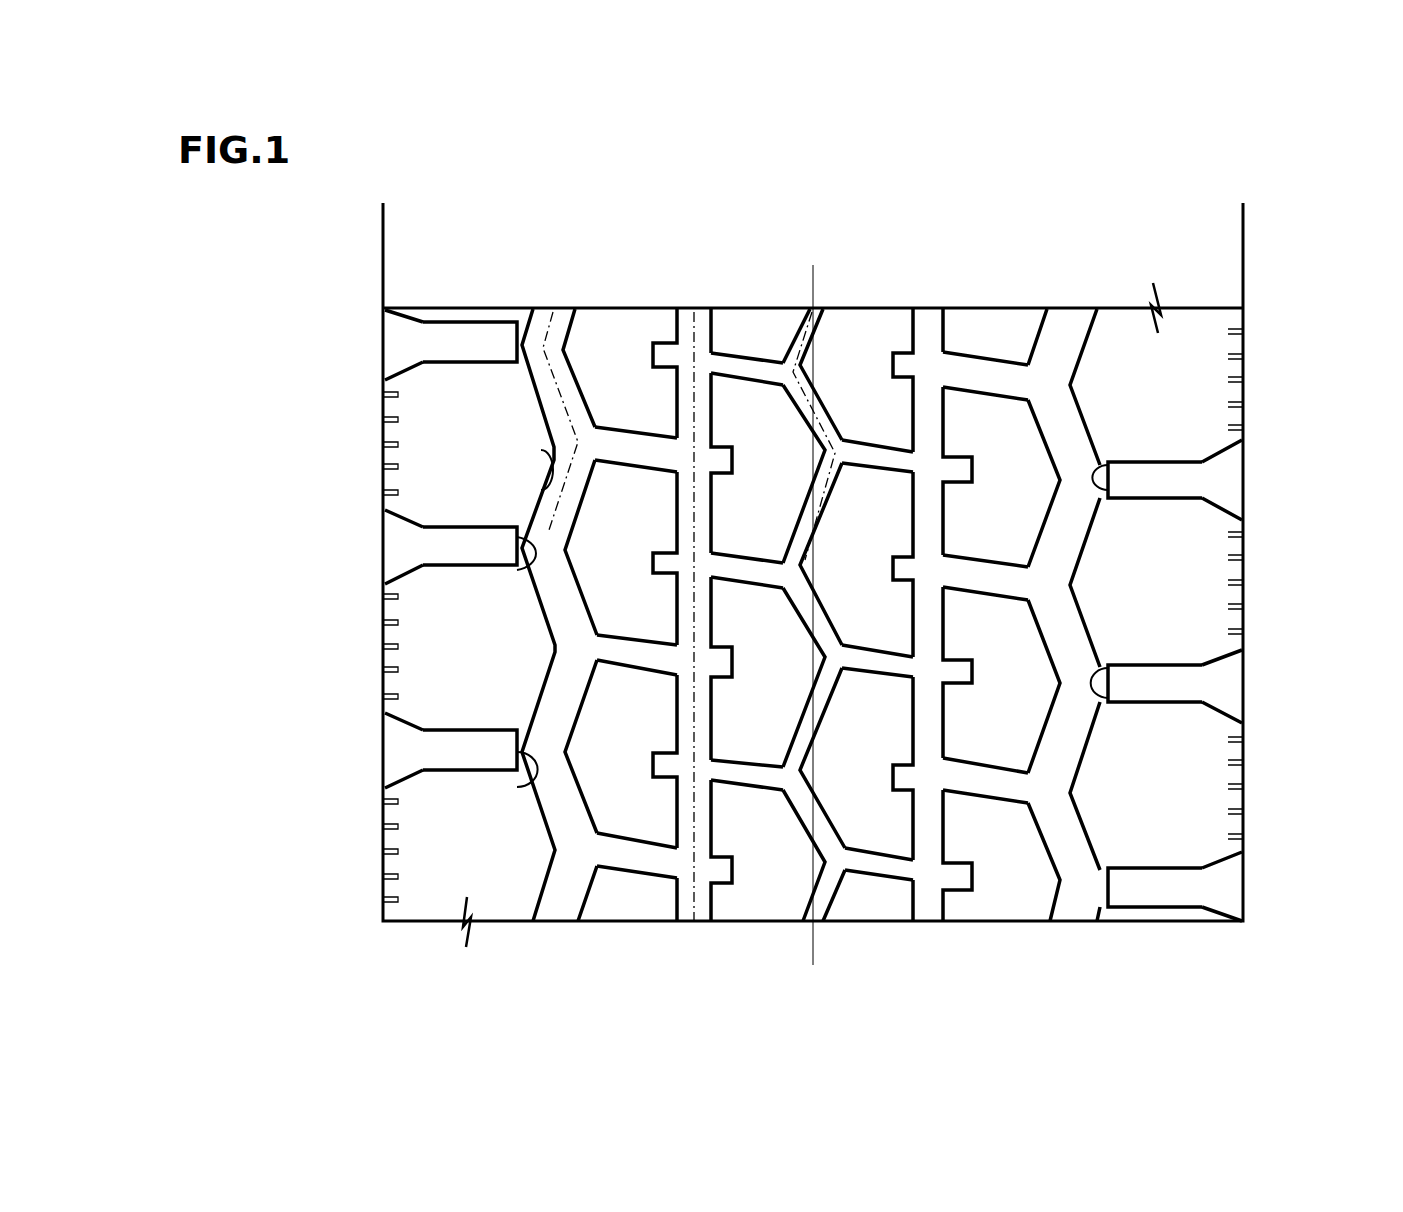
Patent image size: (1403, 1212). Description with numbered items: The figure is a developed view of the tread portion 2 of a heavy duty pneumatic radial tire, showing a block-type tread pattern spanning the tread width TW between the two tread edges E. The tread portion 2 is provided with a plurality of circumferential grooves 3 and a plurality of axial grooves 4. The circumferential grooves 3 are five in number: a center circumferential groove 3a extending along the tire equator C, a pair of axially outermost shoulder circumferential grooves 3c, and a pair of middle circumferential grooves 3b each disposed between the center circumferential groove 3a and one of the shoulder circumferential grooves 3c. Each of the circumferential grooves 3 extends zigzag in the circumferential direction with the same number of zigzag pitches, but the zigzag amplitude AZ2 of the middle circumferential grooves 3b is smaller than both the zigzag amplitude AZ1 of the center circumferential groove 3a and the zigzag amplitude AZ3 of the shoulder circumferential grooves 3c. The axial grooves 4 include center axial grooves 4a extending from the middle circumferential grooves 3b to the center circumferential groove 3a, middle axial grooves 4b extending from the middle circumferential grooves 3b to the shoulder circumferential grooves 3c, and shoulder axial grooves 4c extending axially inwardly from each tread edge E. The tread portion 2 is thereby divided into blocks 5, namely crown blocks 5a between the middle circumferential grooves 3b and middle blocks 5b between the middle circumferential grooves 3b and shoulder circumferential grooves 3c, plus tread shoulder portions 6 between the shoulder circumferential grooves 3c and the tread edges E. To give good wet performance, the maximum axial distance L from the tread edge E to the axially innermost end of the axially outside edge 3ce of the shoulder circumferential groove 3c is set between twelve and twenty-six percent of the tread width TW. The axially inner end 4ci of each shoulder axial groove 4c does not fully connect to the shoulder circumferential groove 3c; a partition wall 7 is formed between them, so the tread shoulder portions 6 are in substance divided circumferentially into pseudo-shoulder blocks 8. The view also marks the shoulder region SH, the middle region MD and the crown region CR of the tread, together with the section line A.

The tread portion 2 is at (460, 437).
The circumferential grooves 3 is at (820, 654).
The center circumferential groove 3a is at (823, 893).
The middle circumferential grooves 3b is at (687, 812).
The shoulder circumferential grooves 3c is at (552, 803).
The axially outside edge of the shoulder circumferential groove 3ce is at (541, 448).
The axial grooves 4 is at (811, 650).
The center axial grooves 4a is at (737, 775).
The middle axial grooves 4b is at (623, 853).
The shoulder axial grooves 4c is at (811, 615).
The axially inner end of the shoulder axial groove 4ci is at (515, 541).
The blocks 5 is at (813, 611).
The crown blocks 5a is at (903, 532).
The middle blocks 5b is at (1035, 528).
The tread shoulder portions 6 is at (424, 932).
The partition wall 7 is at (517, 580).
The pseudo-shoulder blocks 8 is at (478, 680).
The tread width TW is at (385, 210).
The shoulder region SH is at (414, 304).
The middle region MD is at (612, 333).
The crown region CR is at (862, 335).
The tire equator C is at (808, 873).
The tread edges E is at (383, 455).
The section line A- A is at (383, 535).
The maximum axial distance L is at (553, 640).
The zigzag amplitude of the center circumferential groove AZ1 is at (770, 410).
The zigzag amplitude of the middle circumferential grooves AZ2 is at (655, 410).
The zigzag amplitude of the shoulder circumferential grooves AZ3 is at (612, 395).